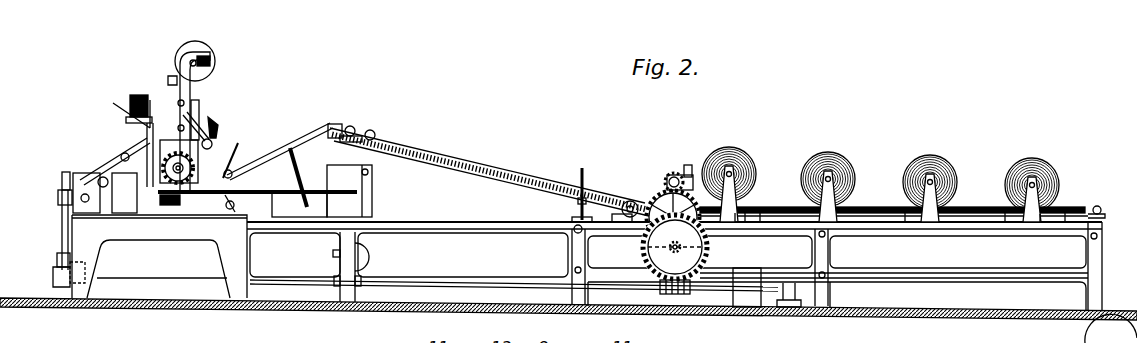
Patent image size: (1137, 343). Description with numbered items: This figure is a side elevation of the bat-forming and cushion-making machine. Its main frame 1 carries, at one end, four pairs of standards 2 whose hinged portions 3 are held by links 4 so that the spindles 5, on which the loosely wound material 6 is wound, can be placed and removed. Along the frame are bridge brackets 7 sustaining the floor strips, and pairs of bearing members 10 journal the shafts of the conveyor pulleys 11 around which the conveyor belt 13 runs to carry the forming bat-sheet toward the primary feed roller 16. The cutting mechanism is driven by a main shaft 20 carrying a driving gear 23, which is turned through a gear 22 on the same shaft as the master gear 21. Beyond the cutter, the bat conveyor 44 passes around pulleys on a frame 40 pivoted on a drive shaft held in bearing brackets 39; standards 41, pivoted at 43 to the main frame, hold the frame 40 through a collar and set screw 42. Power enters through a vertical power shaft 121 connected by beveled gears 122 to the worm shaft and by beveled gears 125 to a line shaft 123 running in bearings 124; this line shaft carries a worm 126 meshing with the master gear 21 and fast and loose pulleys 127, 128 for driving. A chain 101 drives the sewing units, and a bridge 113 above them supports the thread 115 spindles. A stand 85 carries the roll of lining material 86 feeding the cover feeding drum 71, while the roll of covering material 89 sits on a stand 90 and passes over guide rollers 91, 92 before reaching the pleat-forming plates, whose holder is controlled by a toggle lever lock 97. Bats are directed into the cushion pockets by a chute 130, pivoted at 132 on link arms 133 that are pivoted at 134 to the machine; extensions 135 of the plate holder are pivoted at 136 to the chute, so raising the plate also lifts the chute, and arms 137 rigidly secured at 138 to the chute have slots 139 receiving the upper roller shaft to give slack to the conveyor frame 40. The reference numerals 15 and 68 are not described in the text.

The main frame 1 is at (978, 236).
The standards 2 is at (775, 207).
The hinged portion 3 is at (740, 176).
The link 4 is at (731, 168).
The spindles 5 is at (745, 172).
The material 6 is at (722, 155).
The bridge brackets 7 is at (778, 214).
The bearing members 10 is at (1092, 214).
The conveyor pulleys 11 is at (1105, 216).
The conveyor belt 13 is at (1052, 216).
The roller 15 is at (372, 130).
The primary feed roller 16 is at (688, 166).
The main shaft 20 is at (640, 192).
The master gear 21 is at (655, 246).
The gear 22 is at (703, 252).
The driving gear 23 is at (666, 181).
The bearing brackets 39 is at (620, 222).
The frame 40 is at (452, 162).
The standards 41 is at (584, 172).
The collar and set screw 42 is at (578, 202).
The pivot 43 is at (574, 231).
The bat conveyor 44 is at (530, 176).
The bearing block 68 is at (90, 173).
The cover feeding drum 71 is at (212, 137).
The stand 85 is at (200, 90).
The roll of lining material 86 is at (215, 68).
The roll of covering material 89 is at (364, 256).
The stand 90 is at (340, 258).
The guide roller 91 is at (366, 176).
The guide roller 92 is at (338, 176).
The toggle lever lock 97 is at (215, 118).
The chain 101 is at (120, 158).
The bridge 113 is at (120, 118).
The thread 115 is at (152, 88).
The vertical power shaft 121 is at (60, 230).
The beveled gears 122 is at (62, 185).
The line shaft 123 is at (466, 280).
The bearings 124 is at (545, 279).
The beveled gears 125 is at (53, 278).
The worm 126 is at (680, 295).
The fast pulley 127 is at (742, 308).
The loose pulley 128 is at (788, 224).
The chute 130 is at (300, 139).
The pivot 132 is at (296, 152).
The link arms 133 is at (257, 179).
The pivot 134 is at (310, 204).
The extensions 135 is at (270, 140).
The pivot 136 is at (215, 200).
The arms 137 is at (350, 126).
The securing point 138 is at (330, 124).
The slots 139 is at (348, 141).